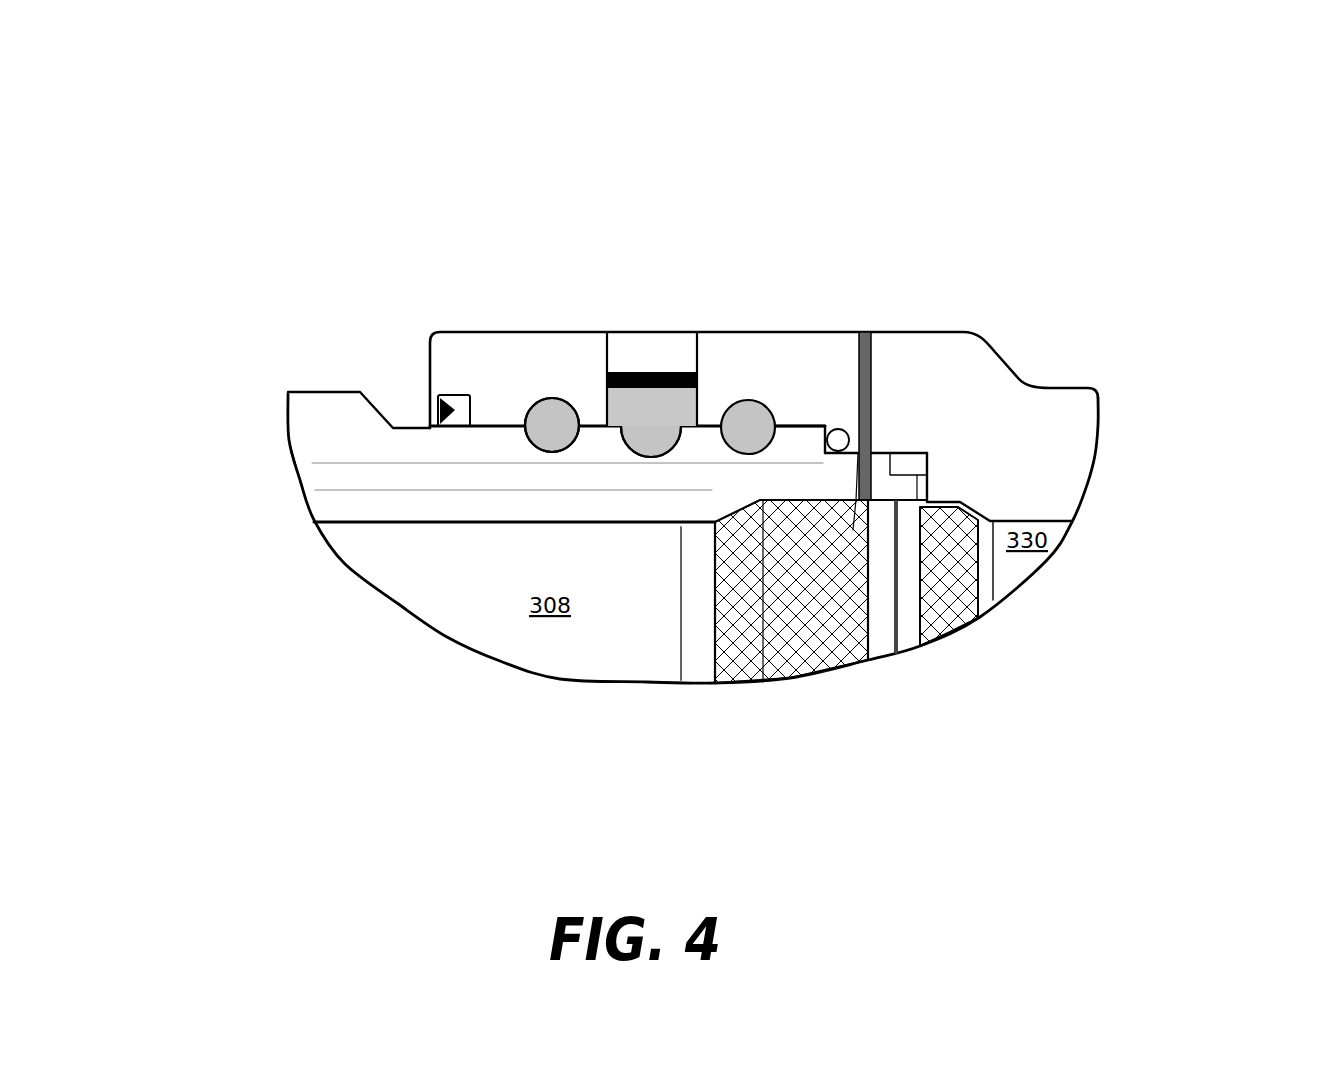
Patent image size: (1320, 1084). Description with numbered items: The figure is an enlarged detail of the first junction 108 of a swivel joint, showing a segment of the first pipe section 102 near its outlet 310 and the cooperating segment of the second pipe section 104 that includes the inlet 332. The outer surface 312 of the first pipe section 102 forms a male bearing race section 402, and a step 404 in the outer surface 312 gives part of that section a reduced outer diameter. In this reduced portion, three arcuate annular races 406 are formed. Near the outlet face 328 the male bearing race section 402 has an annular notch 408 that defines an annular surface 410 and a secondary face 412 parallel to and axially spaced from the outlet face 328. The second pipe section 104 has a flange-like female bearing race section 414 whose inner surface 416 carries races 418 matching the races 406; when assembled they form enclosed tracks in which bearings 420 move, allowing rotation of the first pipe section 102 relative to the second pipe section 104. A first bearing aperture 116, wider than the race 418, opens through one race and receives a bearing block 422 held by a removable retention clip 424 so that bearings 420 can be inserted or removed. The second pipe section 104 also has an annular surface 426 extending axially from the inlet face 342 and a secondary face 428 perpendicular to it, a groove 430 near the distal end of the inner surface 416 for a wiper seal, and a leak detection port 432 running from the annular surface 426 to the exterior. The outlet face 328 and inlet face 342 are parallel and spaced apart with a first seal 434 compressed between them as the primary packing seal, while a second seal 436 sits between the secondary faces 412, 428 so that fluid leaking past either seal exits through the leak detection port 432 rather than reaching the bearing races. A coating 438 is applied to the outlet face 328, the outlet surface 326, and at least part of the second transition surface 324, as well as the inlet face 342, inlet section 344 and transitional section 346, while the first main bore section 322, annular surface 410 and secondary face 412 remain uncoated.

The first pipe section 102 is at (230, 420).
The second pipe section 104 is at (1155, 360).
The first junction 108 is at (990, 162).
The first bearing aperture 116 is at (703, 378).
The outlet 310 is at (843, 707).
The outer surface 312 is at (323, 388).
The first main bore section 322 is at (477, 632).
The second transition surface 324 is at (695, 668).
The outlet surface 326 is at (771, 676).
The outlet face 328 is at (857, 455).
The inlet 332 is at (970, 683).
The inlet face 342 is at (929, 465).
The inlet section 344 is at (928, 481).
The transitional section 346 is at (988, 524).
The male bearing race section 402 is at (468, 460).
The step 404 is at (367, 406).
The races 406 is at (530, 450).
The annular notch 408 is at (764, 503).
The annular surface 410 is at (805, 468).
The secondary face 412 is at (816, 425).
The female bearing race section 414 is at (421, 312).
The inner surface 416 is at (497, 423).
The races 418 is at (541, 401).
The bearings 420 is at (538, 446).
The bearing block 422 is at (617, 418).
The retention clip 424 is at (656, 372).
The annular surface 426 is at (898, 452).
The secondary face 428 is at (874, 452).
The groove 430 is at (443, 393).
The leak detection port 432 is at (866, 433).
The first seal 434 is at (884, 640).
The second seal 436 is at (842, 432).
The coating 438 is at (782, 607).